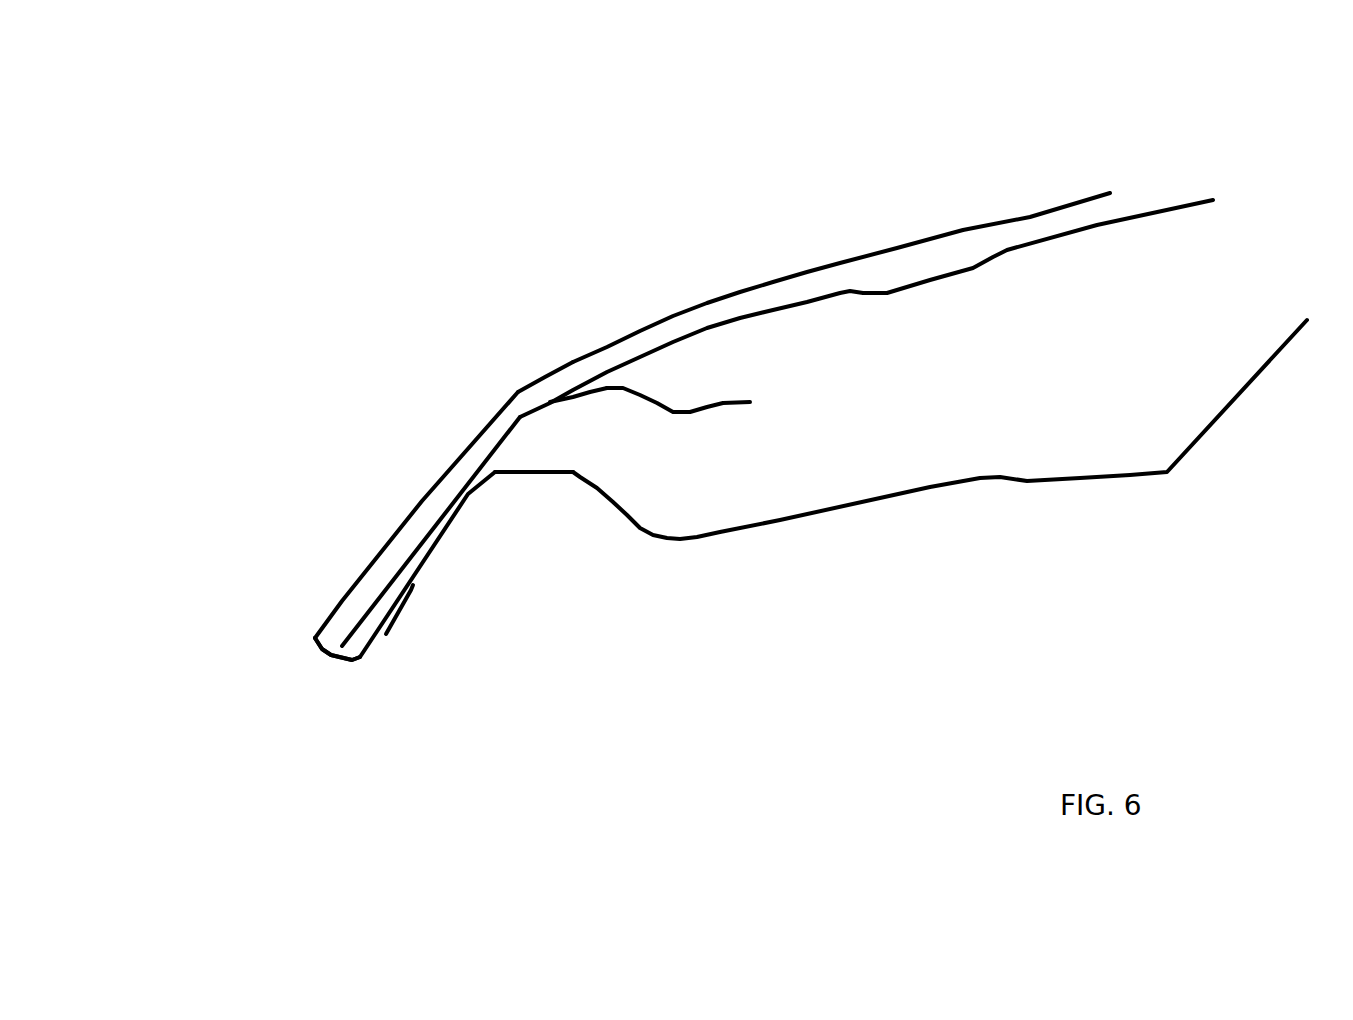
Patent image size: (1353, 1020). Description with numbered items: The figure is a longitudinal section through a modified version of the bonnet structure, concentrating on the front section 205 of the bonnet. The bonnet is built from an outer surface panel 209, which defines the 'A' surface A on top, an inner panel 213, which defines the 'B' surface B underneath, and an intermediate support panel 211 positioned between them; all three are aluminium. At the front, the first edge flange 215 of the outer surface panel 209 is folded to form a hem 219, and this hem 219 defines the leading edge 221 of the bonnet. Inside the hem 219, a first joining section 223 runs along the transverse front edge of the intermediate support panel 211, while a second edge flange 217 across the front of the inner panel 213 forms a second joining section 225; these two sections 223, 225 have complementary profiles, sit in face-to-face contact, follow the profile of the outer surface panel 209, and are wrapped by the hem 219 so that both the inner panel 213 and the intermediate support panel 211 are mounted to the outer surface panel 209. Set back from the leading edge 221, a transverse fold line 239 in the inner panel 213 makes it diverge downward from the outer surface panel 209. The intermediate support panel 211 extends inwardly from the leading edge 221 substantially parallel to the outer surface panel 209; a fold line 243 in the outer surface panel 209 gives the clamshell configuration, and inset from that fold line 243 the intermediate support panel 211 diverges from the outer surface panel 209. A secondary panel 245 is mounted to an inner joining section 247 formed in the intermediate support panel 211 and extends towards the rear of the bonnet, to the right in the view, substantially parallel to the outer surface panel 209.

The front section 205 is at (258, 489).
The outer surface panel 209 is at (593, 351).
The intermediate support panel 211 is at (703, 408).
The inner panel 213 is at (684, 541).
The first edge flange 215 is at (393, 627).
The second edge flange 217 is at (420, 552).
The hem 219 is at (352, 677).
The leading edge 221 is at (312, 648).
The first joining section 223 is at (380, 573).
The second joining section 225 is at (388, 598).
The transverse fold line 239 is at (503, 475).
The fold line 243 is at (518, 391).
The secondary panel 245 is at (777, 317).
The inner joining section 247 is at (577, 403).
The 'A' surface A is at (439, 437).
The 'B' surface B is at (816, 569).